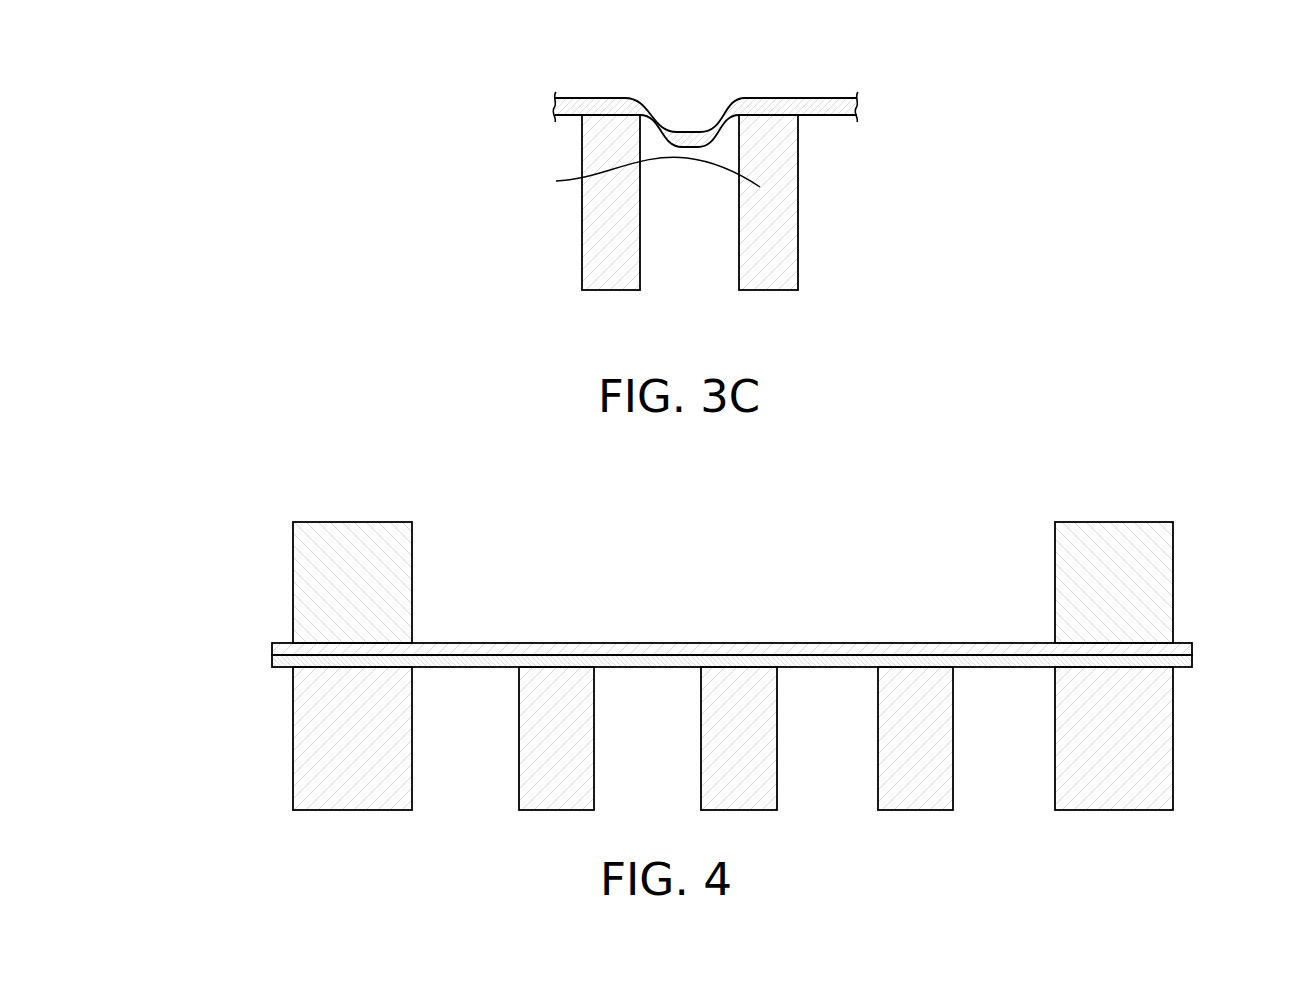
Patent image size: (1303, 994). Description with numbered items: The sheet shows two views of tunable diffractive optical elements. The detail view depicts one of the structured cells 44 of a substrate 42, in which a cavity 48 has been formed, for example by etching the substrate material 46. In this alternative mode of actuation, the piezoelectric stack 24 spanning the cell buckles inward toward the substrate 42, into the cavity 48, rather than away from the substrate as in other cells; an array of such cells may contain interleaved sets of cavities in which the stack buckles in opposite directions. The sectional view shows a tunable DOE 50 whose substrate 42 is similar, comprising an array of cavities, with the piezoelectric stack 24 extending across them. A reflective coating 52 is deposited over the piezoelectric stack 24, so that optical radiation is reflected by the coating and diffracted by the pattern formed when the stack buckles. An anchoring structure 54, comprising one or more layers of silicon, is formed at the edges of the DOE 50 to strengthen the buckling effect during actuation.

In FIG. 3C, the piezoelectric stack 24 is at (820, 102).
In FIG. 4, the piezoelectric stack 24 is at (1190, 657).
In FIG. 4, the substrate 42 is at (1197, 667).
In FIG. 3C, the structured cells 44 is at (615, 303).
In FIG. 3C, the substrate material 46 is at (595, 172).
In FIG. 3C, the cavity 48 is at (701, 207).
In FIG. 4, the tunable DOE 50 is at (257, 521).
In FIG. 4, the reflective coating 52 is at (1190, 647).
In FIG. 4, the anchoring structure 54 is at (1167, 580).